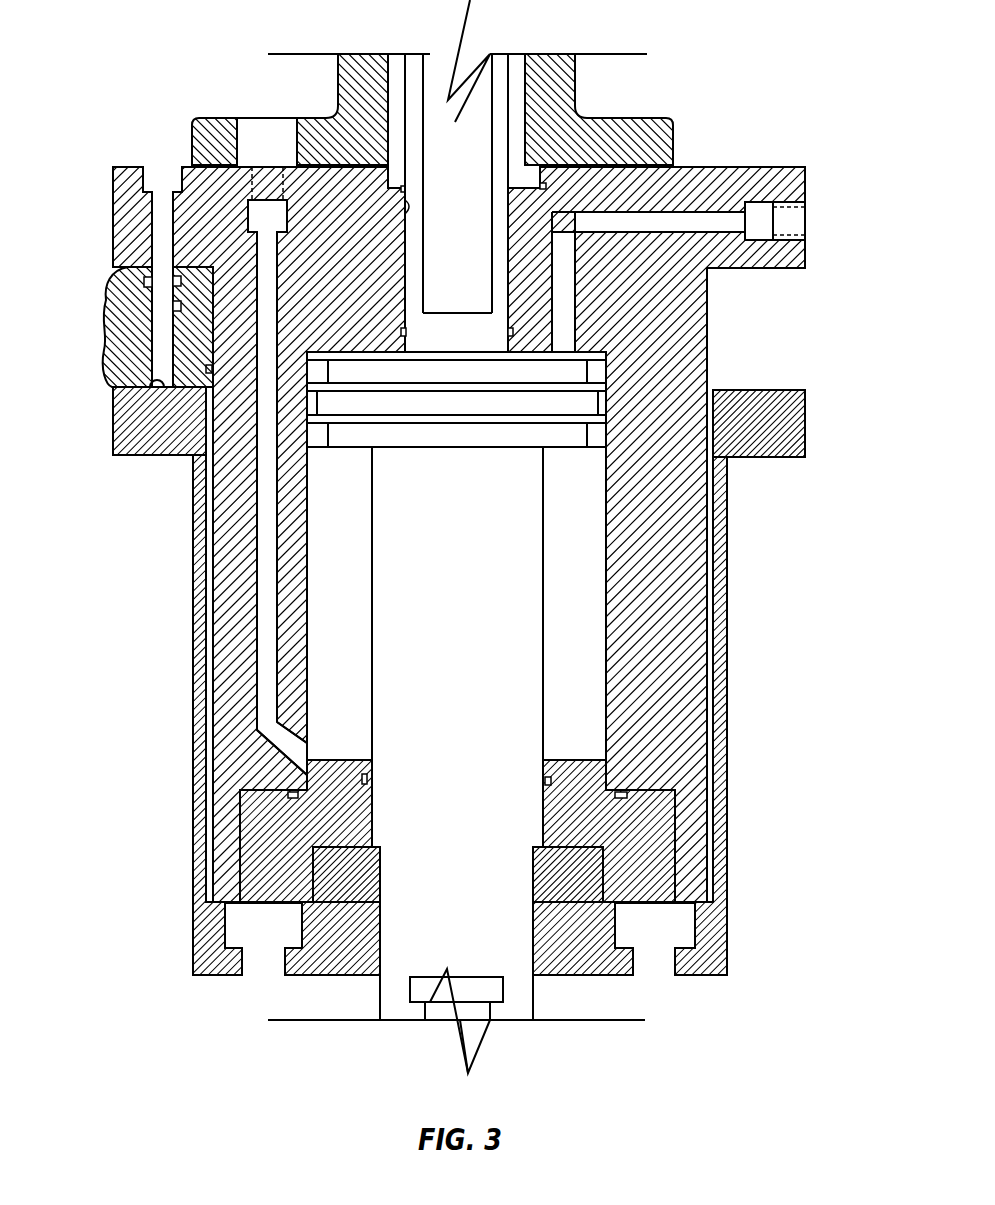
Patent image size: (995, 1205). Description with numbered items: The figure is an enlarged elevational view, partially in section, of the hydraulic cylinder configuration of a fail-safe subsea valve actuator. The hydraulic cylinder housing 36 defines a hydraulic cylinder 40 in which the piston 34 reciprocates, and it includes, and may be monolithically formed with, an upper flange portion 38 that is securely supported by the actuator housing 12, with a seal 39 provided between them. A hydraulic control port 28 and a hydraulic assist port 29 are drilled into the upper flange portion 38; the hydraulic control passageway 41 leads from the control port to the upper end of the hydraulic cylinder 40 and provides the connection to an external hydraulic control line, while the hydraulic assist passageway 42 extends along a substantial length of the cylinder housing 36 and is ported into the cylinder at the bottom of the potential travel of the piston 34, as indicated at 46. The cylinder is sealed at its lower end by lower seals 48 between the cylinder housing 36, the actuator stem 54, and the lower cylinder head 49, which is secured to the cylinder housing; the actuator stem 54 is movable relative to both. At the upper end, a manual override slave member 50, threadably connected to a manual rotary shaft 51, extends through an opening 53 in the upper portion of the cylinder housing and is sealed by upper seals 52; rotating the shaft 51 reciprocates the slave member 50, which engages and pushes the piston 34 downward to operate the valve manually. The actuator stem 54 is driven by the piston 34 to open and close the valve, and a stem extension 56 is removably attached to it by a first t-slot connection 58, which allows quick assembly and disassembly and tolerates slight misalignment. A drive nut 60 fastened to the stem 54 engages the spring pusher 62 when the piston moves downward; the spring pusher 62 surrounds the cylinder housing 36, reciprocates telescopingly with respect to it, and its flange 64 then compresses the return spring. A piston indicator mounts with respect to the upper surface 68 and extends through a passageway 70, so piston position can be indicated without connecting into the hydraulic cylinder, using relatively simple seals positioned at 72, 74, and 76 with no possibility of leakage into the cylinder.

The actuator housing 12 is at (127, 347).
The hydraulic control port 28 is at (800, 213).
The hydraulic assist port 29 is at (267, 188).
The piston 34 is at (580, 403).
The hydraulic cylinder housing 36 is at (680, 585).
The upper flange portion 38 is at (688, 185).
The seal 39 is at (207, 370).
The hydraulic cylinder 40 is at (578, 600).
The hydraulic control passageway 41 is at (567, 230).
The hydraulic assist passageway 42 is at (268, 457).
The port of hydraulic assist passageway 46 is at (298, 752).
The lower seals 48 is at (548, 780).
The lower cylinder head 49 is at (623, 830).
The manual override slave member 50 is at (474, 349).
The manual rotary shaft 51 is at (490, 53).
The upper seals 52 is at (403, 335).
The opening 53 is at (393, 188).
The actuator stem 54 is at (472, 828).
The stem extension 56 is at (473, 1012).
The first t-slot connection 58 is at (517, 995).
The drive nut 60 is at (348, 882).
The spring pusher 62 is at (197, 600).
The flange 64 is at (775, 410).
The upper surface 68 is at (153, 373).
The passageway 70 is at (158, 233).
The seal 72 is at (178, 183).
The seal 74 is at (145, 280).
The seal 76 is at (143, 308).